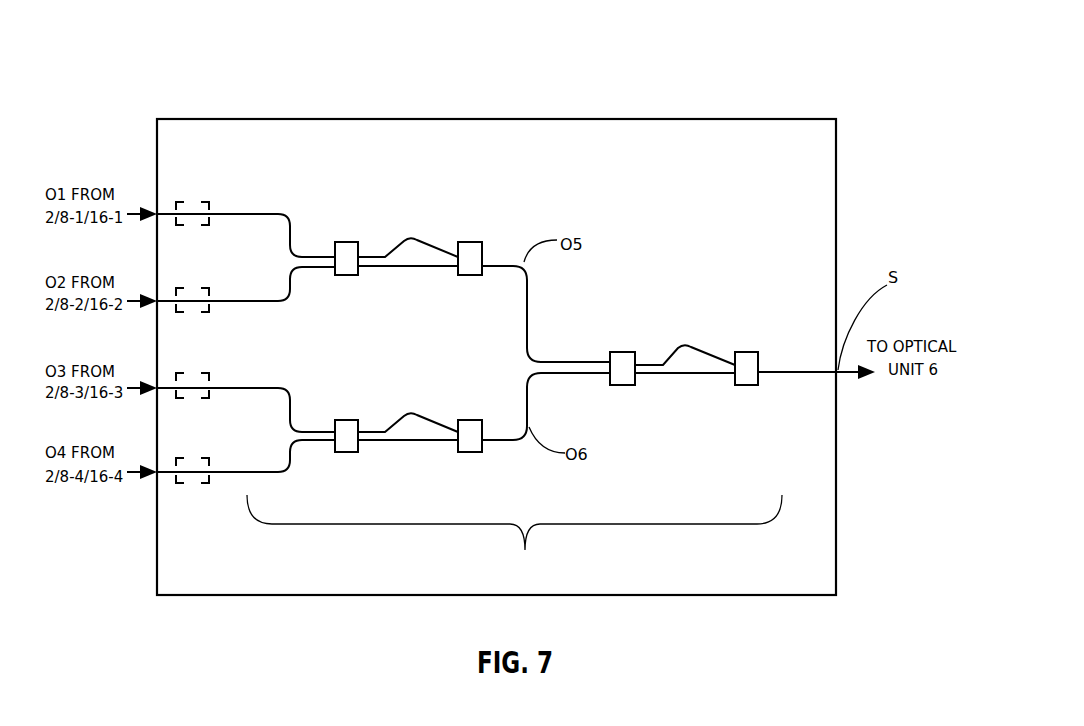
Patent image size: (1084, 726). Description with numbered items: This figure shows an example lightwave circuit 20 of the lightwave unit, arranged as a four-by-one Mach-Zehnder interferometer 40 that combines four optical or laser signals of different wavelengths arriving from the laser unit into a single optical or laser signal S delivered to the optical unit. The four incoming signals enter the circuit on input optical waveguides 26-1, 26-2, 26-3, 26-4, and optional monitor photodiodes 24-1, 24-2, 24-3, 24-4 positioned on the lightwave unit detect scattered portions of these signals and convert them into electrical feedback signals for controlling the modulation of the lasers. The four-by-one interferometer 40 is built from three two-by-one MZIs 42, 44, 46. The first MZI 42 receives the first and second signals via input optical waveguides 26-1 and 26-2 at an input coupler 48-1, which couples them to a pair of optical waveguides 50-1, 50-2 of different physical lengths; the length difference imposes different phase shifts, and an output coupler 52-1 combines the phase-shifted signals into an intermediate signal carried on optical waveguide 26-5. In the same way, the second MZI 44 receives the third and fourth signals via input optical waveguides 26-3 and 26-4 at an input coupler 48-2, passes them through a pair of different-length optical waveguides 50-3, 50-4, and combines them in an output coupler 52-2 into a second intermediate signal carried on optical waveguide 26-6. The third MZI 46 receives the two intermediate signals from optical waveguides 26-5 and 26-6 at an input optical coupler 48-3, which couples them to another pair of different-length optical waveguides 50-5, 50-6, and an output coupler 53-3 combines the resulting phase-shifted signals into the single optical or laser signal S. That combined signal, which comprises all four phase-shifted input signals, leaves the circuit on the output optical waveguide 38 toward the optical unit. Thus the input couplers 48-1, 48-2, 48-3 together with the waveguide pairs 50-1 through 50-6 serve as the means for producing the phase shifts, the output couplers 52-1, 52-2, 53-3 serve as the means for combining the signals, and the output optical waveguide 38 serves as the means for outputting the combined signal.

The lightwave circuit 20 is at (489, 99).
The monitor photodiode 24-1 is at (180, 202).
The monitor photodiode 24-2 is at (187, 288).
The monitor photodiode 24-3 is at (187, 373).
The monitor photodiode 24-4 is at (187, 458).
The input optical waveguide 26-1 is at (241, 212).
The input optical waveguide 26-2 is at (262, 302).
The input optical waveguide 26-3 is at (280, 387).
The input optical waveguide 26-4 is at (262, 473).
The optical waveguide 26-5 is at (527, 300).
The optical waveguide 26-6 is at (540, 375).
The first 2×1 Mach-Zehnder interferometer 42 is at (448, 201).
The second 2×1 Mach-Zehnder interferometer 44 is at (432, 359).
The third 2×1 Mach-Zehnder interferometer 46 is at (692, 298).
The input coupler 48-1 is at (352, 242).
The input coupler 48-2 is at (342, 420).
The input optical coupler 48-3 is at (622, 352).
The optical waveguide 50-1 is at (418, 240).
The optical waveguide 50-2 is at (393, 267).
The optical waveguide 50-3 is at (433, 420).
The optical waveguide 50-4 is at (372, 441).
The optical waveguide 50-5 is at (700, 347).
The optical waveguide 50-6 is at (667, 374).
The output coupler 52-1 is at (473, 242).
The output coupler 52-2 is at (462, 452).
The output coupler 53-3 is at (756, 356).
The output optical waveguide 38 is at (813, 375).
The 4×1 Mach-Zehnder interferometer 40 is at (514, 539).